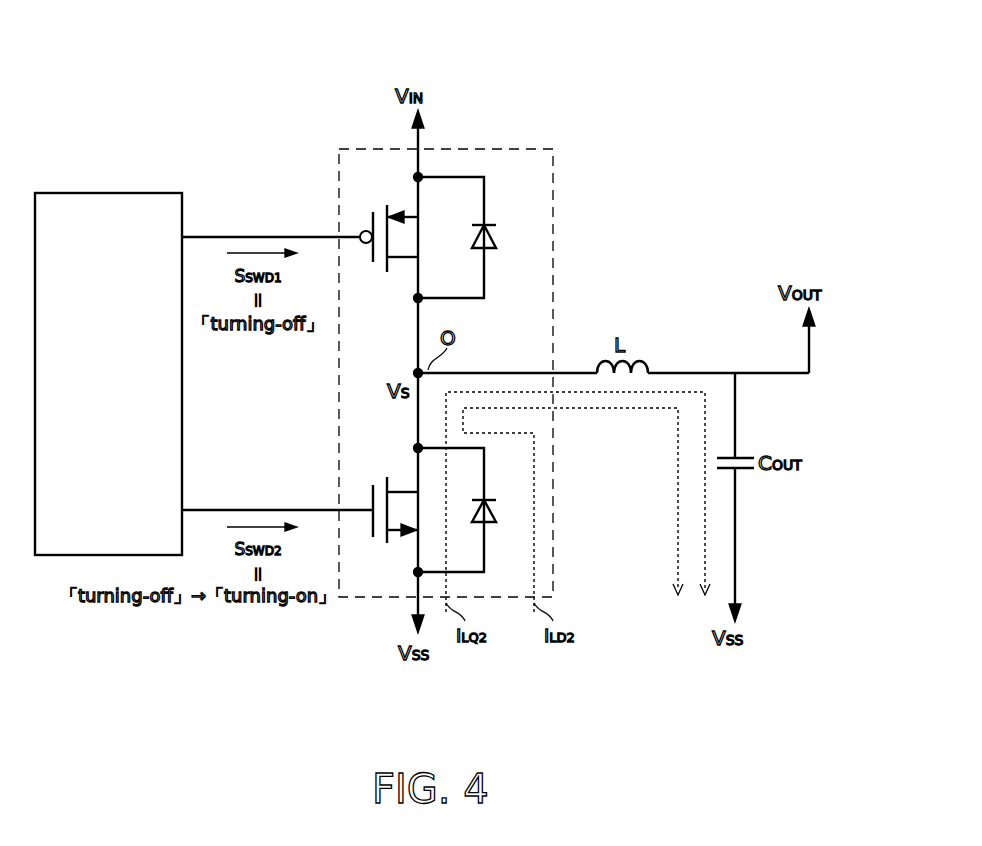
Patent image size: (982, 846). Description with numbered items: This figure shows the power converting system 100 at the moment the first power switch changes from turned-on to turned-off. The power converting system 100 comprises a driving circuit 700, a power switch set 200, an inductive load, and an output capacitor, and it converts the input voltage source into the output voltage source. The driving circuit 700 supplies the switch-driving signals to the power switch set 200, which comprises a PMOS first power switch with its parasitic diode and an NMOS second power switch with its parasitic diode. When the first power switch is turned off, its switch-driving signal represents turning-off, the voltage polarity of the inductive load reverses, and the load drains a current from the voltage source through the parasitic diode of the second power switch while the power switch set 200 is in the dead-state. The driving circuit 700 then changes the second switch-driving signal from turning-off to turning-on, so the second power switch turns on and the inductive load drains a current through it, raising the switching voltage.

The power converting system 100 is at (700, 82).
The power switch set 200 is at (500, 148).
The driving circuit 700 is at (112, 192).